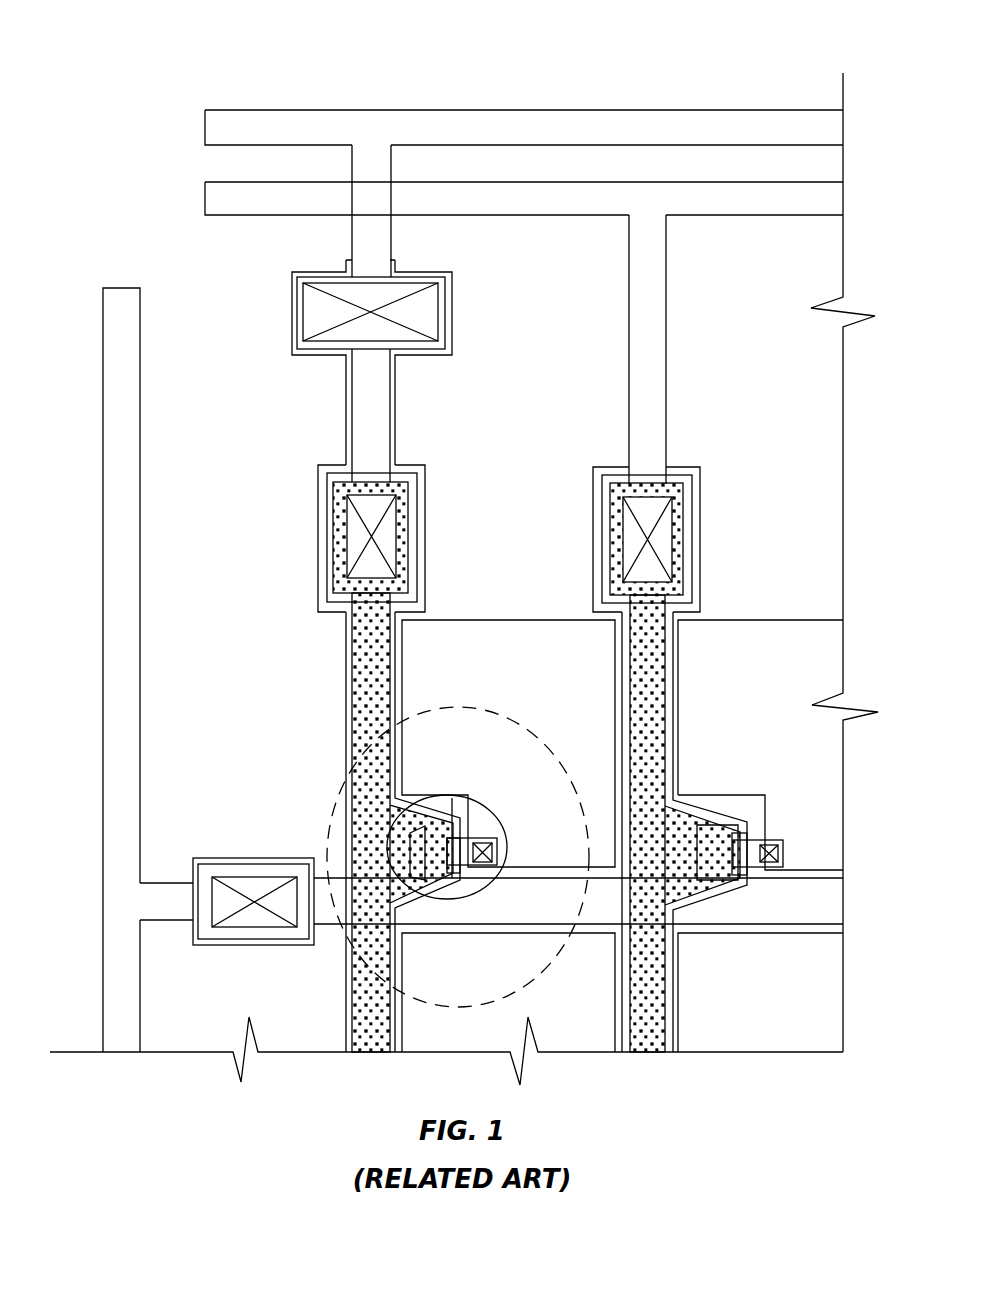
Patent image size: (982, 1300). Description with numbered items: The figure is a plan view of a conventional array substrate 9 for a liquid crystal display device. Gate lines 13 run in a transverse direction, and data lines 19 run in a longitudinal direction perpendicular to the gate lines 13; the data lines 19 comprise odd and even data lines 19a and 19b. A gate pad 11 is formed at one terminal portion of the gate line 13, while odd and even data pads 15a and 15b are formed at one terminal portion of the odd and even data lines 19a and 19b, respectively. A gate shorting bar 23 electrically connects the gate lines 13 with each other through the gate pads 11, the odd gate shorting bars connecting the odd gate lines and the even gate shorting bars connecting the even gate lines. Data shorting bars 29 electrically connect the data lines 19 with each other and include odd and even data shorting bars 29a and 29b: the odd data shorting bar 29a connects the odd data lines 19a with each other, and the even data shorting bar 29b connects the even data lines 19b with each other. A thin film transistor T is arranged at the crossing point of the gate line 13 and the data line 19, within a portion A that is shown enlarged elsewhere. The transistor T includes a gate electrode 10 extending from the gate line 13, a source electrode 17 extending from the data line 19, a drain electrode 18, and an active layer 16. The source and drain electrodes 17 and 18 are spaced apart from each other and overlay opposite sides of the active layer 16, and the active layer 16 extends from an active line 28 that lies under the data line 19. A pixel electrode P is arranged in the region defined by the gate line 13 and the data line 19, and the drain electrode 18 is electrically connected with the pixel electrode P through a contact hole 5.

The array substrate 9 is at (125, 192).
The data shorting bars 29 is at (524, 107).
The odd data shorting bar 29a is at (400, 110).
The even data shorting bar 29b is at (400, 47).
The active line 28 is at (408, 552).
The odd data pad 15a is at (372, 538).
The even data pad 15b is at (602, 547).
The data lines 19 is at (470, 822).
The odd data line 19a is at (350, 715).
The even data line 19b is at (677, 670).
The pixel electrode P is at (515, 622).
The gate line 13 is at (545, 880).
The gate pad 11 is at (258, 858).
The gate shorting bar 23 is at (105, 936).
The thin film transistor T is at (472, 862).
The source electrode 17 is at (420, 835).
The gate electrode 10 is at (447, 840).
The drain electrode 18 is at (500, 850).
The active layer 16 is at (440, 882).
The contact hole 5 is at (495, 885).
The portion A is at (535, 982).